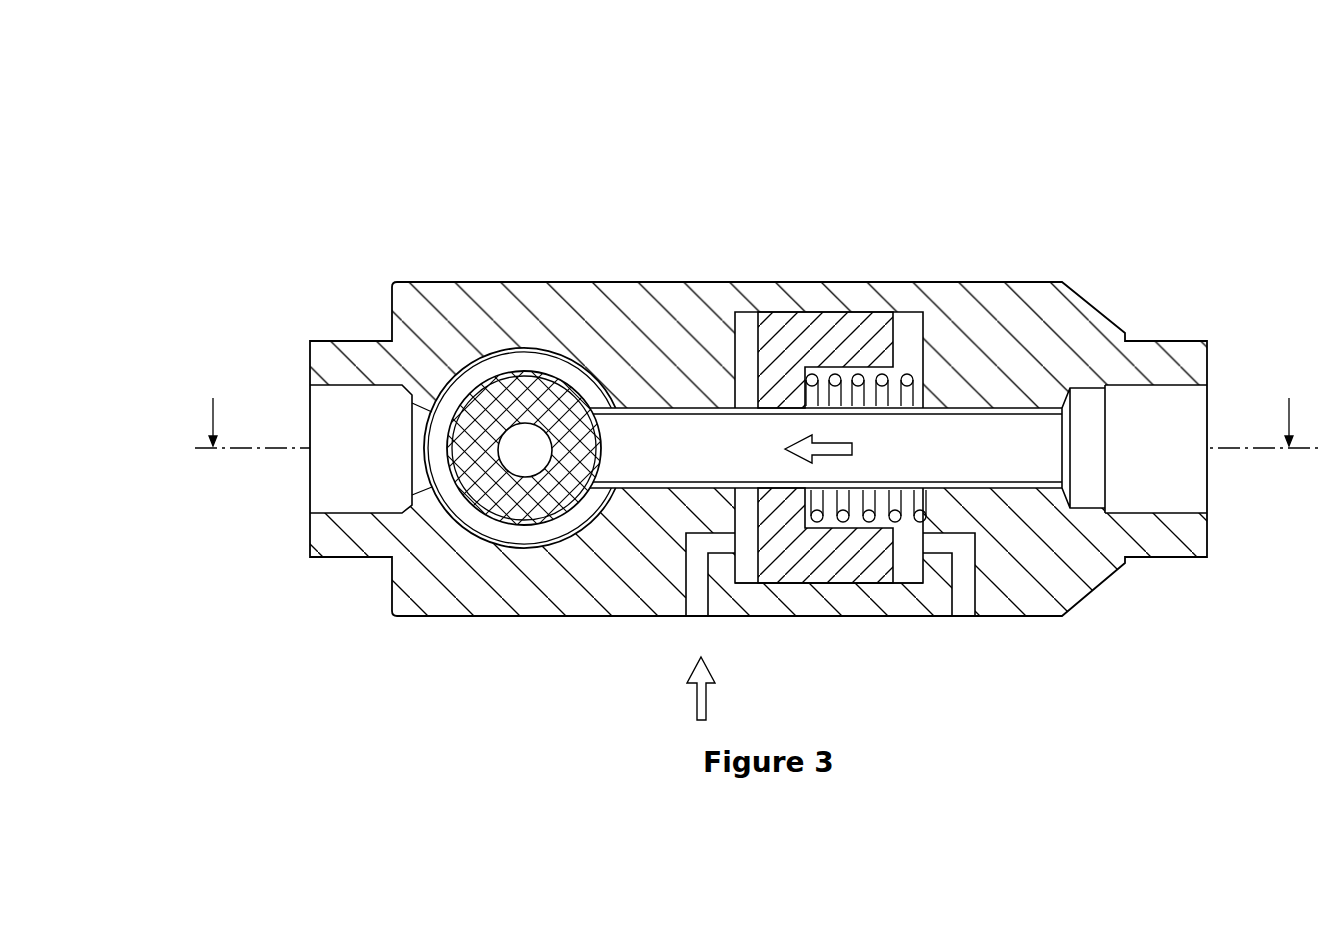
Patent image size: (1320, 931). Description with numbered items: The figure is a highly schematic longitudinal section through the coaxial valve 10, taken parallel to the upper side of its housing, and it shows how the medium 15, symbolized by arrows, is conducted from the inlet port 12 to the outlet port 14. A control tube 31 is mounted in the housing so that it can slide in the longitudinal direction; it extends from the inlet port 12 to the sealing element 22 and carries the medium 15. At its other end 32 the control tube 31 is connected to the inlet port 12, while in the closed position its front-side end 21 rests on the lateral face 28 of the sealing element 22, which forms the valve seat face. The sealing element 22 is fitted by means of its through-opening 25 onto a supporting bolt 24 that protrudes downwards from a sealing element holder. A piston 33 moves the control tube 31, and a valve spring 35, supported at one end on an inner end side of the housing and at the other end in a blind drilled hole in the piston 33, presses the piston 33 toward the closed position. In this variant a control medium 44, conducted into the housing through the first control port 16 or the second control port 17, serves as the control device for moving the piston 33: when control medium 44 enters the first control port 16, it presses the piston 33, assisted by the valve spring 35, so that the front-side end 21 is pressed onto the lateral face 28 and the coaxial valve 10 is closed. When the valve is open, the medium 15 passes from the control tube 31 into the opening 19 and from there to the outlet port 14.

The coaxial valve 10 is at (1094, 143).
The inlet port 12 is at (1153, 358).
The outlet port 14 is at (348, 365).
The medium 15 is at (830, 443).
The first control port 16 is at (962, 616).
The second control port 17 is at (686, 606).
The opening 19 is at (533, 533).
The front-side end 21 is at (596, 495).
The sealing element 22 is at (497, 503).
The supporting bolt 24 is at (522, 446).
The through-opening 25 is at (504, 449).
The lateral face 28 is at (605, 432).
The control tube 31 is at (970, 404).
The other end 32 is at (1078, 512).
The piston 33 is at (857, 585).
The valve spring 35 is at (862, 368).
The control medium 44 is at (706, 697).